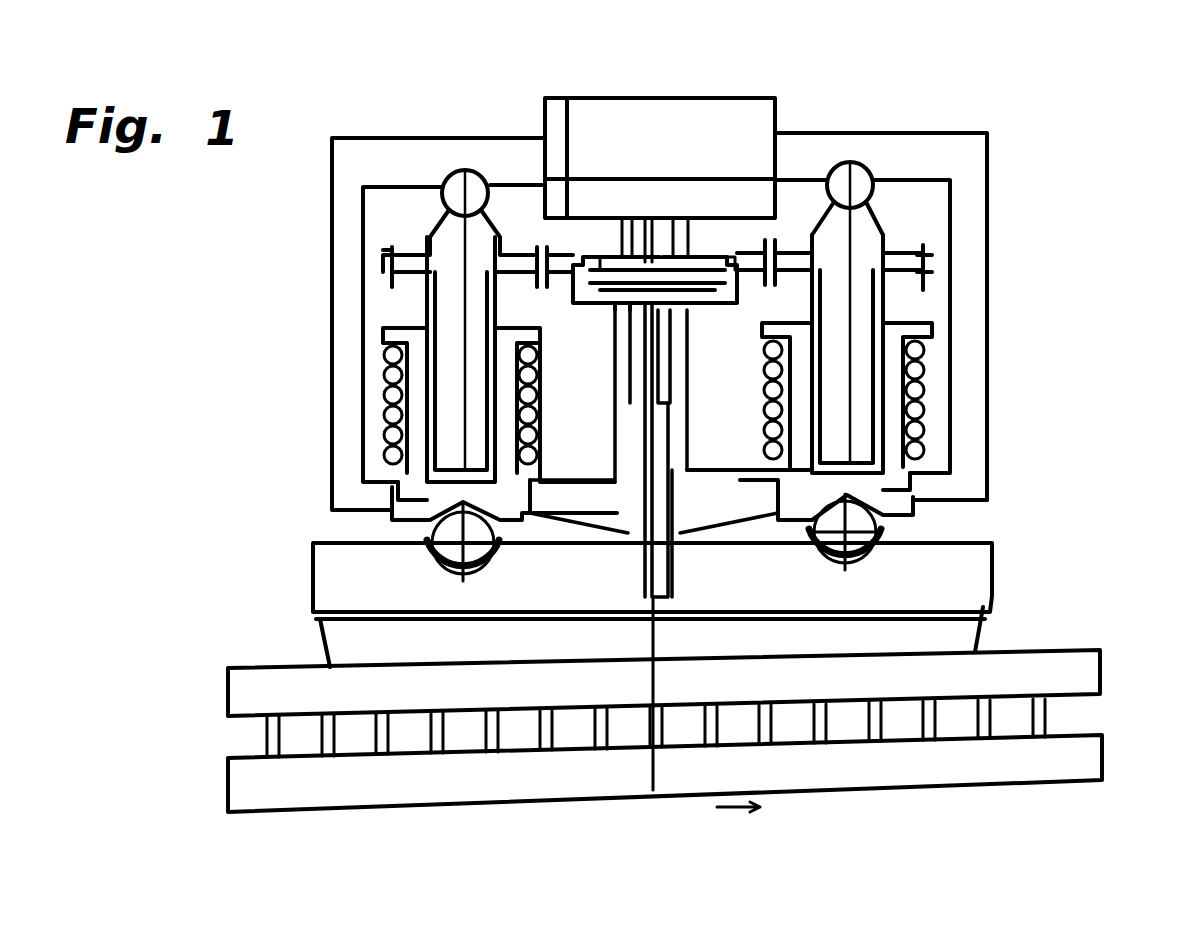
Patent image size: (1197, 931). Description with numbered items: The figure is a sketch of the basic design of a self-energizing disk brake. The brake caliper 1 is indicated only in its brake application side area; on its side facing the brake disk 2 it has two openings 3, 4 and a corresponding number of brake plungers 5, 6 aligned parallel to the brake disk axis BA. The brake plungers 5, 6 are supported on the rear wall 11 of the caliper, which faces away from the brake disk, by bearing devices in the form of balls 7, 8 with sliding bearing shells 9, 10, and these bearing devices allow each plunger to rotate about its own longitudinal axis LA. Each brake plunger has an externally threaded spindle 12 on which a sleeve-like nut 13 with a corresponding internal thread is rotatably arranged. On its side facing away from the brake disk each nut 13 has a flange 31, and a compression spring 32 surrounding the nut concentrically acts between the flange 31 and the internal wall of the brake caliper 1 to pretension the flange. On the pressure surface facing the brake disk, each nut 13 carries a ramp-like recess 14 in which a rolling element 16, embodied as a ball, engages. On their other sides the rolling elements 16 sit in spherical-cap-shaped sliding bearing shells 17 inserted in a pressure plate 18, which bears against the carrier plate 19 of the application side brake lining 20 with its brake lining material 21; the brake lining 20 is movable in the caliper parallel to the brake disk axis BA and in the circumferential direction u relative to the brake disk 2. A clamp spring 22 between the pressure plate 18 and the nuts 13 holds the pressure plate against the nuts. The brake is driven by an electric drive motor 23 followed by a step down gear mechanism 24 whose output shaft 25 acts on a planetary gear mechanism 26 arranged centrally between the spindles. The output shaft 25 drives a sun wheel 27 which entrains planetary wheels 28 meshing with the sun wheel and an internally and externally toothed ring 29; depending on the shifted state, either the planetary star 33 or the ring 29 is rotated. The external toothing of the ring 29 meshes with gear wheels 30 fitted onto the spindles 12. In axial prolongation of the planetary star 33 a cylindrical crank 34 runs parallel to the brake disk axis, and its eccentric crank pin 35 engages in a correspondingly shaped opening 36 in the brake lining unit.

The brake caliper 1 is at (362, 160).
The brake disk 2 is at (345, 780).
The opening 3 is at (378, 501).
The opening 4 is at (888, 508).
The brake plunger 5 is at (378, 327).
The brake plunger 6 is at (900, 320).
The ball 7 is at (463, 168).
The ball 8 is at (868, 172).
The sliding bearing shell 9 is at (482, 168).
The sliding bearing shell 10 is at (908, 155).
The rear wall 11 is at (925, 123).
The spindle 12 is at (447, 283).
The nut 13 is at (415, 428).
The ramp like recess 14 is at (690, 457).
The rolling element 16 is at (413, 545).
The sliding bearing shell 17 is at (455, 600).
The pressure plate 18 is at (563, 578).
The carrier plate 19 is at (494, 638).
The brake lining 20 is at (1013, 602).
The brake lining material 21 is at (653, 790).
The clamp spring 22 is at (743, 612).
The electric drive motor 23 is at (698, 123).
The step down gear mechanism 24 is at (715, 200).
The output shaft 25 is at (668, 248).
The planetary gear mechanism 26 is at (735, 245).
The sun wheel 27 is at (650, 262).
The planetary wheels 28 is at (586, 306).
The ring 29 is at (563, 253).
The gear wheel 30 is at (405, 248).
The flange 31 is at (947, 305).
The compression spring 32 is at (917, 385).
The planetary star 33 is at (670, 320).
The crank 34 is at (925, 497).
The crank pin 35 is at (672, 575).
The opening 36 is at (690, 564).
The longitudinal axis LA is at (430, 574).
The brake disk axis BA is at (582, 640).
The circumferential direction u is at (738, 820).